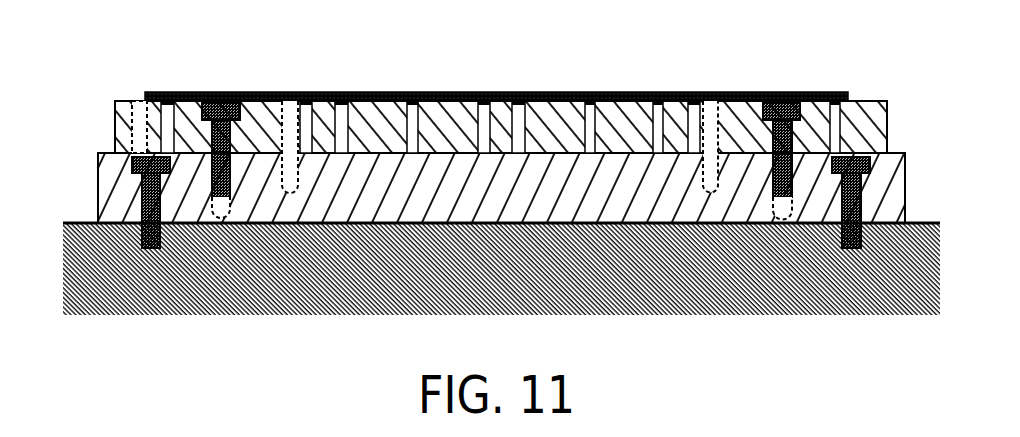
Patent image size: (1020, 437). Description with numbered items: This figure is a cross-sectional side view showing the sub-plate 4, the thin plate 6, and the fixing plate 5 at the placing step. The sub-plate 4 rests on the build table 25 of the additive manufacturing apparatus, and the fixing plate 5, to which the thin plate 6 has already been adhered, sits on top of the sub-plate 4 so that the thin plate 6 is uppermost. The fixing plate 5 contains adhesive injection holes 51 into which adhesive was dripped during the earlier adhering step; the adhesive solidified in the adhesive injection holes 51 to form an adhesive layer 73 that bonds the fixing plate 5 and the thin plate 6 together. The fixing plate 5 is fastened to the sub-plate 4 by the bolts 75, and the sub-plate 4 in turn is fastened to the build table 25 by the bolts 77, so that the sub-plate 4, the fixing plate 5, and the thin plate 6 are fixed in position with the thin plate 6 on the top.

The sub-plate 4 is at (118, 210).
The fixing plate 5 is at (872, 101).
The thin plate 6 is at (551, 93).
The build table 25 is at (222, 306).
The adhesive injection hole 51 is at (411, 93).
The adhesive layer 73 is at (168, 110).
The bolt 75 is at (216, 93).
The bolt 77 is at (152, 250).